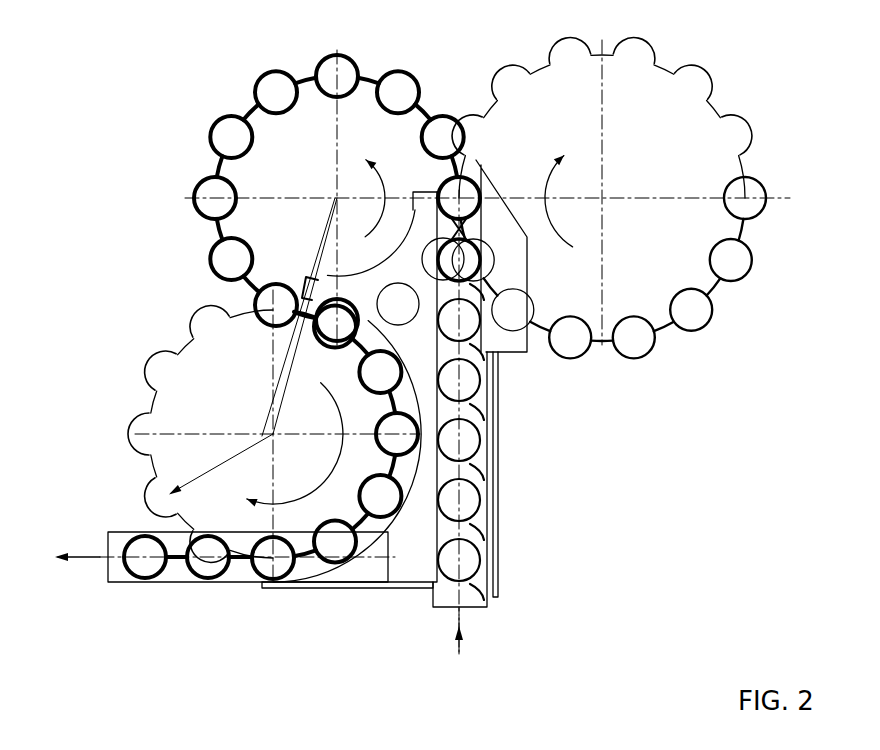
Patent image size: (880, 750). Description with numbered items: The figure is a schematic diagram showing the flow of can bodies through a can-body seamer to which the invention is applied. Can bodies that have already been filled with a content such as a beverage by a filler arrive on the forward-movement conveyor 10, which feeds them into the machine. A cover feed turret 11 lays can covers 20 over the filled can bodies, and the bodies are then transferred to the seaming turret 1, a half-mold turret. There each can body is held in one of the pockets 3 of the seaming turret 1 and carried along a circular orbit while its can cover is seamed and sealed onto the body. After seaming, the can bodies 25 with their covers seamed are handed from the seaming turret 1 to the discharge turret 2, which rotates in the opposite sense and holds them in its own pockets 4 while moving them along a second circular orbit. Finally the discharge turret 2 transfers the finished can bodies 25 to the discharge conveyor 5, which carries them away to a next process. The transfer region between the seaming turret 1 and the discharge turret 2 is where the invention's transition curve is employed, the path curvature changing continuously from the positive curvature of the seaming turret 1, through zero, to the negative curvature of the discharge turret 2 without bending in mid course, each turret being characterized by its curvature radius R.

The seaming turret 1 is at (265, 130).
The discharge turret 2 is at (178, 412).
The pockets of the seaming turret 3 is at (390, 296).
The pockets of the discharge turret 4 is at (187, 380).
The discharge conveyor 5 is at (175, 575).
The forward-movement conveyor 10 is at (488, 537).
The cover feed turret 11 is at (688, 154).
The can cover 20 is at (708, 325).
The can body 25 is at (262, 74).